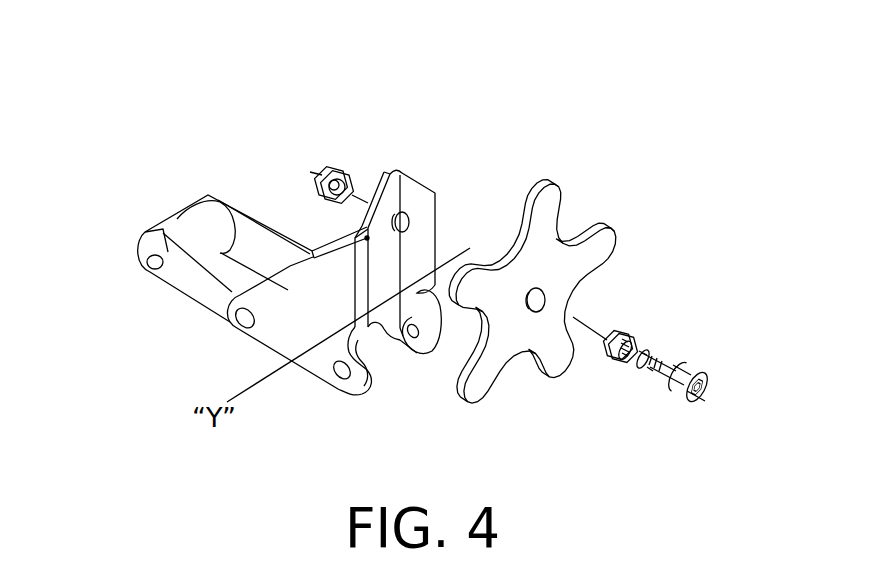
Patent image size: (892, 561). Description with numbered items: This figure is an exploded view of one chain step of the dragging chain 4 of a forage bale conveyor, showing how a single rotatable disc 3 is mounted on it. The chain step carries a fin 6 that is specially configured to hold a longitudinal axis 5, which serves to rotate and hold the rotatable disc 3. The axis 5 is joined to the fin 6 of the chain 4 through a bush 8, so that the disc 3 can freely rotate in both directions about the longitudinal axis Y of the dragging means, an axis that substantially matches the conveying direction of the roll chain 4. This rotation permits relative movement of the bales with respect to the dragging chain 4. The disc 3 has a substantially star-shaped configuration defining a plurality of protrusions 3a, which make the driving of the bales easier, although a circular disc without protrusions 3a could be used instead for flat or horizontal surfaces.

The rotatable disc 3 is at (592, 209).
The protrusions 3a is at (545, 213).
The dragging chain 4 is at (203, 322).
The longitudinal axis 5 is at (667, 360).
The fin 6 is at (420, 200).
The bush 8 is at (615, 362).